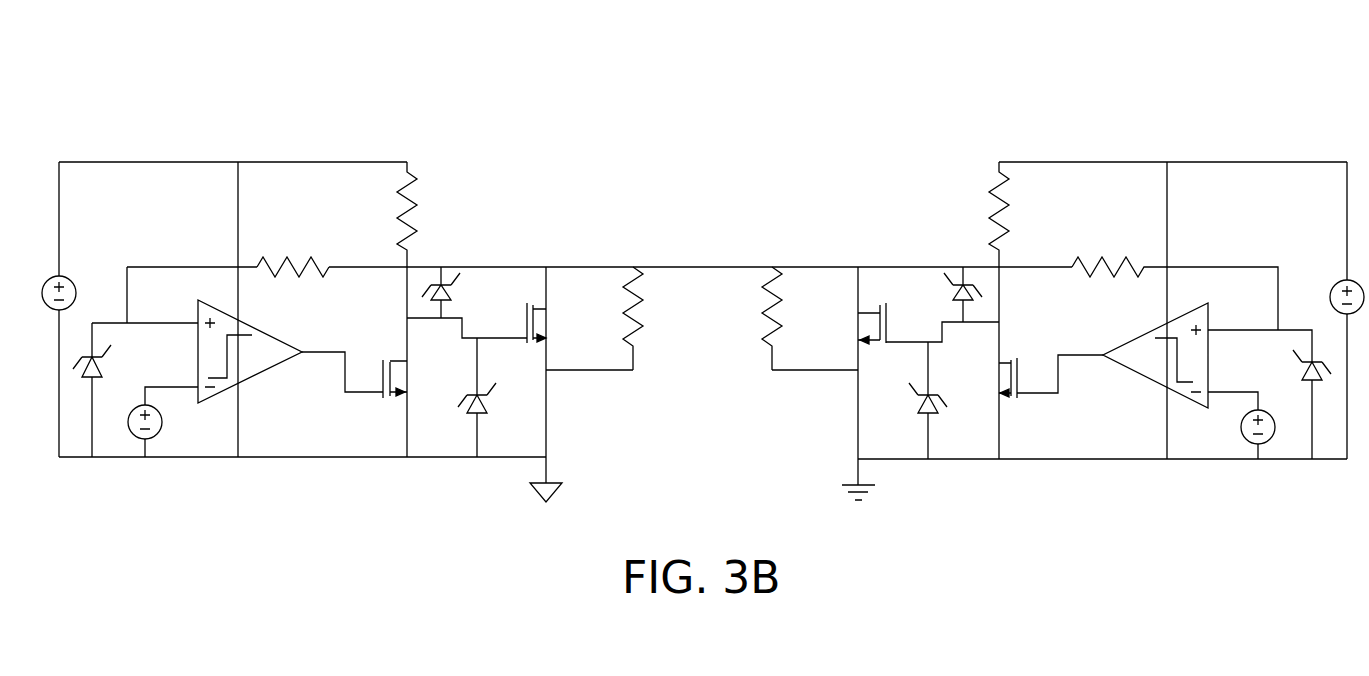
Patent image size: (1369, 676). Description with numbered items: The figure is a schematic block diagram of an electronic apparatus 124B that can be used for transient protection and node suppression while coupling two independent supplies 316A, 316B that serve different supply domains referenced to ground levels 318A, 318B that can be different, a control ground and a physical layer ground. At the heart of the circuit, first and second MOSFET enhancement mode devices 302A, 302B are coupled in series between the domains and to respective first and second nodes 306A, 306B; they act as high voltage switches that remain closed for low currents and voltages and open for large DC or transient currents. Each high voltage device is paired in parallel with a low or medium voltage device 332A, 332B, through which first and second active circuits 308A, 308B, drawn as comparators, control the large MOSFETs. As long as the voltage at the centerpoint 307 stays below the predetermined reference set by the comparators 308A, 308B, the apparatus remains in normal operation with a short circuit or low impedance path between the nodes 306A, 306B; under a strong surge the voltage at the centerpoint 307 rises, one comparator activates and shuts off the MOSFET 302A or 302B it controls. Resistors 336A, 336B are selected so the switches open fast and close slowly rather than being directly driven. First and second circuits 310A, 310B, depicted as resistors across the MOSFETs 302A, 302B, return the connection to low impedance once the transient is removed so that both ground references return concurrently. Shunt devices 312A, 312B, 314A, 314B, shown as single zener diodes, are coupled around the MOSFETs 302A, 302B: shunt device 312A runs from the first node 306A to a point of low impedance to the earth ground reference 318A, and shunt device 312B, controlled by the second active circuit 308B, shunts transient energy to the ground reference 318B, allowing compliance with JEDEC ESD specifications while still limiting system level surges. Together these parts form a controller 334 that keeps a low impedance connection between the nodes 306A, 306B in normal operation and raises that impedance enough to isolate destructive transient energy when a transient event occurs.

The electronic apparatus 124B is at (226, 98).
The centerpoint 307 is at (700, 267).
The first MOSFET enhancement mode device 302A is at (522, 330).
The second MOSFET enhancement mode device 302B is at (887, 330).
The first node 306A is at (548, 372).
The second node 306B is at (858, 372).
The first active circuit 308A is at (250, 377).
The second active circuit 308B is at (1158, 385).
The first circuit 310A is at (641, 337).
The second circuit 310B is at (766, 345).
The shunt device 312A is at (454, 397).
The shunt device 312B is at (947, 400).
The shunt device 314A is at (425, 296).
The shunt device 314B is at (978, 288).
The independent supply 316A is at (70, 300).
The independent supply 316B is at (1340, 308).
The ground reference 318A is at (547, 462).
The ground reference 318B is at (858, 462).
The first low and/or medium voltage device 332A is at (432, 379).
The second low and/or medium voltage device 332B is at (1000, 390).
The controller 334 is at (1130, 500).
The resistor 336A is at (418, 236).
The resistor 336B is at (990, 238).